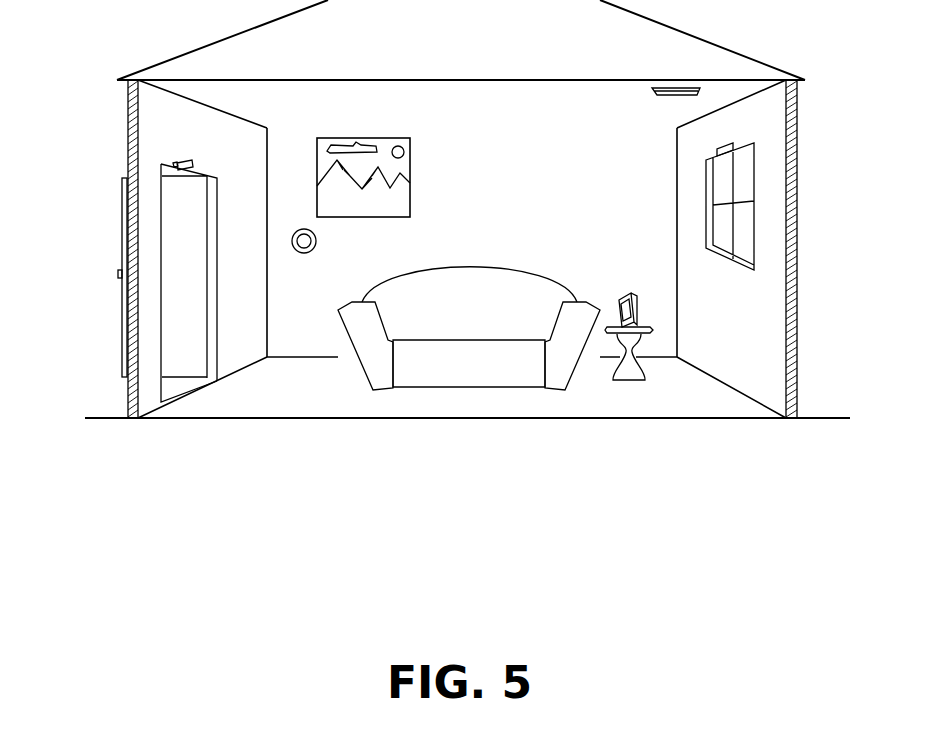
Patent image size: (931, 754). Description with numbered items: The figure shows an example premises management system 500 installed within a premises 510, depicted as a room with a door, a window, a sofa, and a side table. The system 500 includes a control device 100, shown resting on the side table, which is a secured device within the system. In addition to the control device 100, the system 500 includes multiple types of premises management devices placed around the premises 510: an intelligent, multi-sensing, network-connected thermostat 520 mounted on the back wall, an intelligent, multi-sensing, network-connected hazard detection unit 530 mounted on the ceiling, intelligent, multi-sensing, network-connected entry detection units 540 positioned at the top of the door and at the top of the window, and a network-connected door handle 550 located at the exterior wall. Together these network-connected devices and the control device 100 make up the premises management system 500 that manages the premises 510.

The control device 100 is at (624, 296).
The premises management system 500 is at (460, 498).
The premises 510 is at (480, 216).
The thermostat 520 is at (292, 243).
The hazard detection unit 530 is at (662, 95).
The entry detection unit 540 is at (186, 162).
The door handle 550 is at (118, 274).